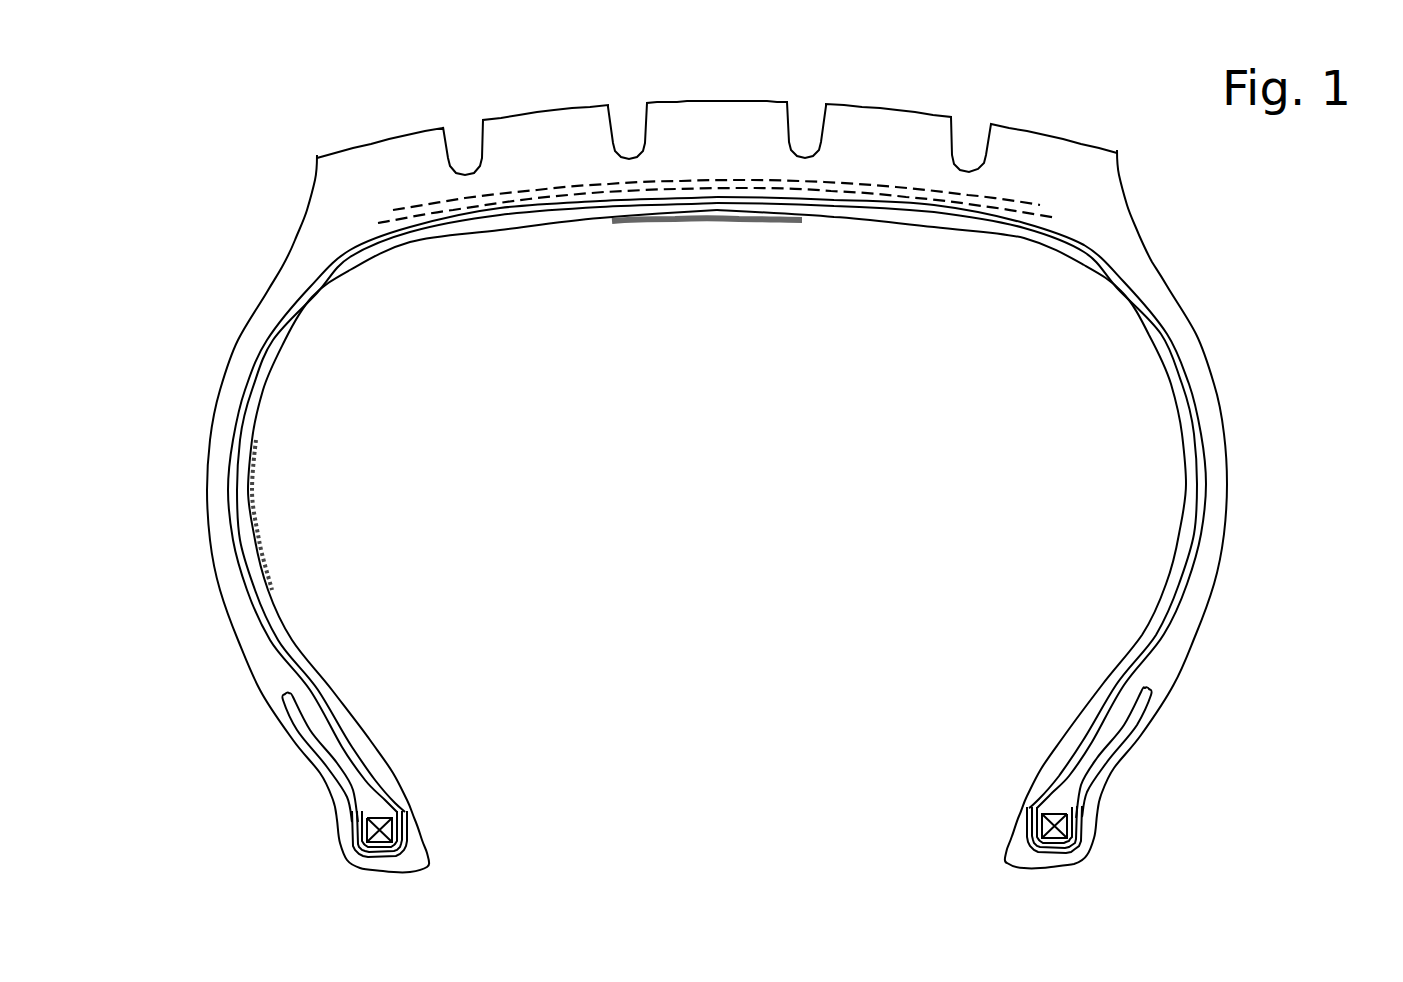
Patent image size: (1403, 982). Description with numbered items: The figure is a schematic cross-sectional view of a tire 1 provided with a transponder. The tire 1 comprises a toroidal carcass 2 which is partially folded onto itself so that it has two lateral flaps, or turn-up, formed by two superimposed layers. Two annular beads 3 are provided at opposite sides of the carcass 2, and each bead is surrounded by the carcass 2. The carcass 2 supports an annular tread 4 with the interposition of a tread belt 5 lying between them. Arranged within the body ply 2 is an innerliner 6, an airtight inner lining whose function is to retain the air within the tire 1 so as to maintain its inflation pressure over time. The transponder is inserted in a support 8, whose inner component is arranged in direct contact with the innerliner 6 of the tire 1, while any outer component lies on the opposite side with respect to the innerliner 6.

The tire 1 is at (270, 98).
The toroidal carcass 2 is at (291, 300).
The annular beads 3 is at (394, 743).
The annular tread 4 is at (865, 133).
The tread belt 5 is at (1075, 213).
The innerliner 6 is at (428, 237).
The support 8 is at (715, 223).